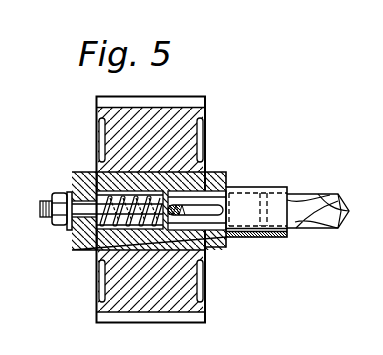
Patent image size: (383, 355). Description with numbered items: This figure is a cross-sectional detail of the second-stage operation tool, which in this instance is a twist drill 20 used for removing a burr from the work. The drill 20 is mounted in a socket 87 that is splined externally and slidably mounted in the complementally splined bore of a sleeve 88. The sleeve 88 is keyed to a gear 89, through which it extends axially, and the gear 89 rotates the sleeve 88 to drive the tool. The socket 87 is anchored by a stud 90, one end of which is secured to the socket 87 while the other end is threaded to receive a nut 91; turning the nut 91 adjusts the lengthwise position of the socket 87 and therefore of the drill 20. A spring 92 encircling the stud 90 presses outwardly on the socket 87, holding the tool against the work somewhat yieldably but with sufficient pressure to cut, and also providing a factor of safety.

The twist drill 20 is at (324, 224).
The socket 87 is at (270, 188).
The sleeve 88 is at (210, 250).
The gear 89 is at (190, 112).
The stud 90 is at (83, 204).
The nut 91 is at (64, 224).
The spring 92 is at (145, 196).